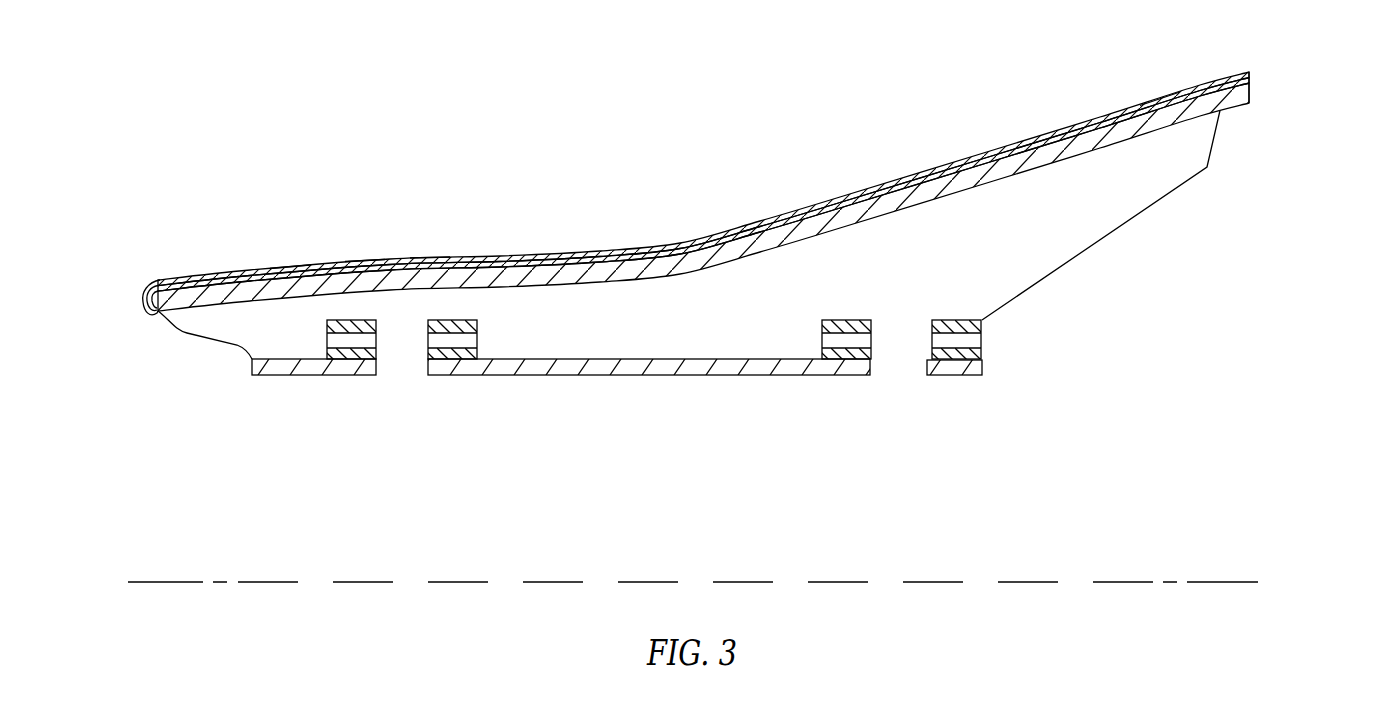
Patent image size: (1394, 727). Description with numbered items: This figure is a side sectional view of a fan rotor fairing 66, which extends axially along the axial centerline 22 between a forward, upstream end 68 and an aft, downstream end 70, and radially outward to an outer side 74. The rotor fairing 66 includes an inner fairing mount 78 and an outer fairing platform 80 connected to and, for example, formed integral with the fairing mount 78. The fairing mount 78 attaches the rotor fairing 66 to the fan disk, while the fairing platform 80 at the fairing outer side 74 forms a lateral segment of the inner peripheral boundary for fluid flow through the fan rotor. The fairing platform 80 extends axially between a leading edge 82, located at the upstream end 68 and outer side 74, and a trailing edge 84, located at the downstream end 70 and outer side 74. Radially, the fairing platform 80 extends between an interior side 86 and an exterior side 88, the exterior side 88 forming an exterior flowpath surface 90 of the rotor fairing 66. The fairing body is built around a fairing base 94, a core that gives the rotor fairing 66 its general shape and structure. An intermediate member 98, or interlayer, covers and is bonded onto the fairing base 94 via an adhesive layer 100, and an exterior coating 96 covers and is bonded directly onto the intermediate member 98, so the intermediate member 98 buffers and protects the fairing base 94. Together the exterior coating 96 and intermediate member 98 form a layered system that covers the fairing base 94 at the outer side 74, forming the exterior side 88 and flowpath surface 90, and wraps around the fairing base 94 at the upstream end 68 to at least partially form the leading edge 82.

The axial centerline 22 is at (1237, 580).
The rotor fairing 66 is at (735, 252).
The forward, upstream end 68 is at (130, 263).
The aft, downstream end 70 is at (1309, 74).
The outer side 74 is at (1158, 98).
The inner fairing mount 78 is at (281, 390).
The outer fairing platform 80 is at (703, 189).
The leading edge 82 is at (143, 300).
The trailing edge 84 is at (1255, 77).
The interior side 86 is at (703, 218).
The exterior side 88 is at (703, 157).
The exterior flowpath surface 90 is at (703, 157).
The fairing base 94 is at (840, 226).
The exterior coating 96 is at (362, 261).
The intermediate member 98 is at (428, 259).
The adhesive layer 100 is at (290, 269).